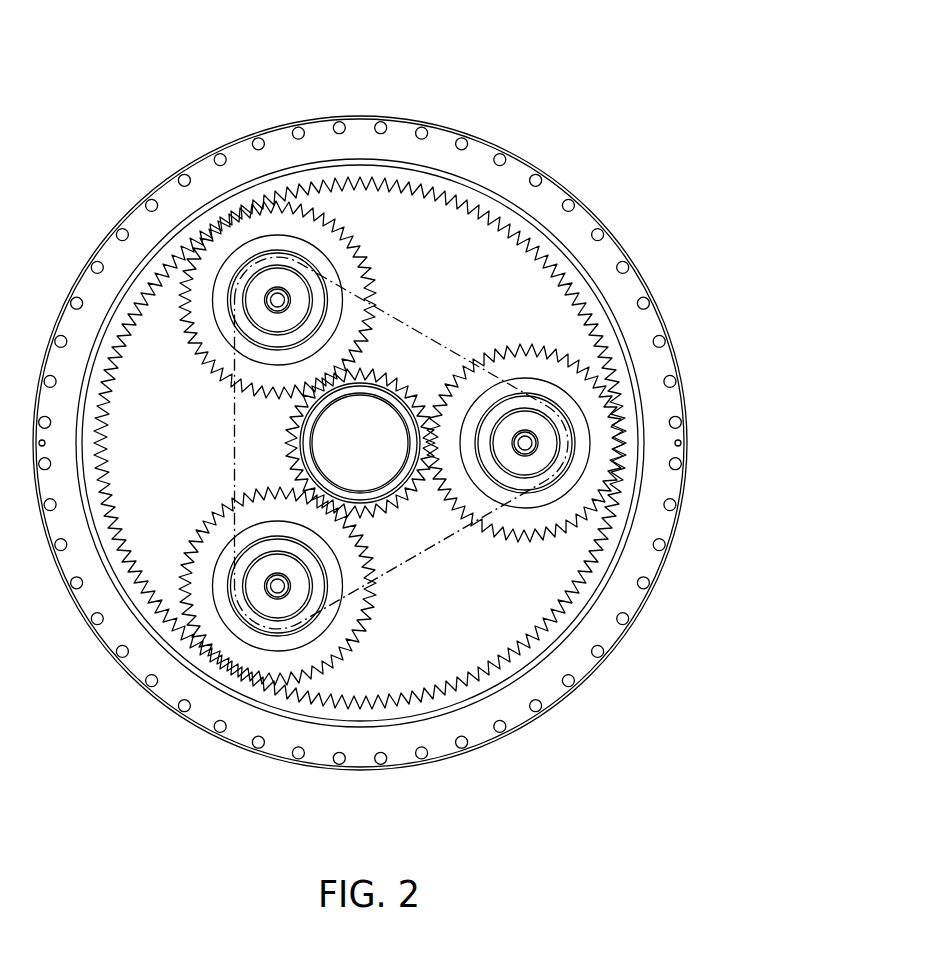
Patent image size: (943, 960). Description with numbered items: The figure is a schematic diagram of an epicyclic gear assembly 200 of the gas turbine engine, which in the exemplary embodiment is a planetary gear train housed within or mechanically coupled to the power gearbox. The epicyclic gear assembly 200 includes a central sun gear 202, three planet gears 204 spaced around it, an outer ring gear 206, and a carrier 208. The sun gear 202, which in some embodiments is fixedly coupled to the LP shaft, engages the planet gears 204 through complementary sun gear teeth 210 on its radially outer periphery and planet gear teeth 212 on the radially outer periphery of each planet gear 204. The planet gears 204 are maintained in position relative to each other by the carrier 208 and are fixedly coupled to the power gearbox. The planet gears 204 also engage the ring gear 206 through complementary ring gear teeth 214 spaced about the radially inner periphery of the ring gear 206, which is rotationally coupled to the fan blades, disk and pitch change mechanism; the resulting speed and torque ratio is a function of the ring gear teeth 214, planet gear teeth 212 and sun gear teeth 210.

The epicyclic gear assembly 200 is at (507, 62).
The sun gear 202 is at (385, 465).
The planet gears 204 is at (253, 265).
The ring gear 206 is at (592, 205).
The carrier 208 is at (390, 572).
The sun gear teeth 210 is at (292, 437).
The planet gear teeth 212 is at (388, 285).
The ring gear teeth 214 is at (542, 262).